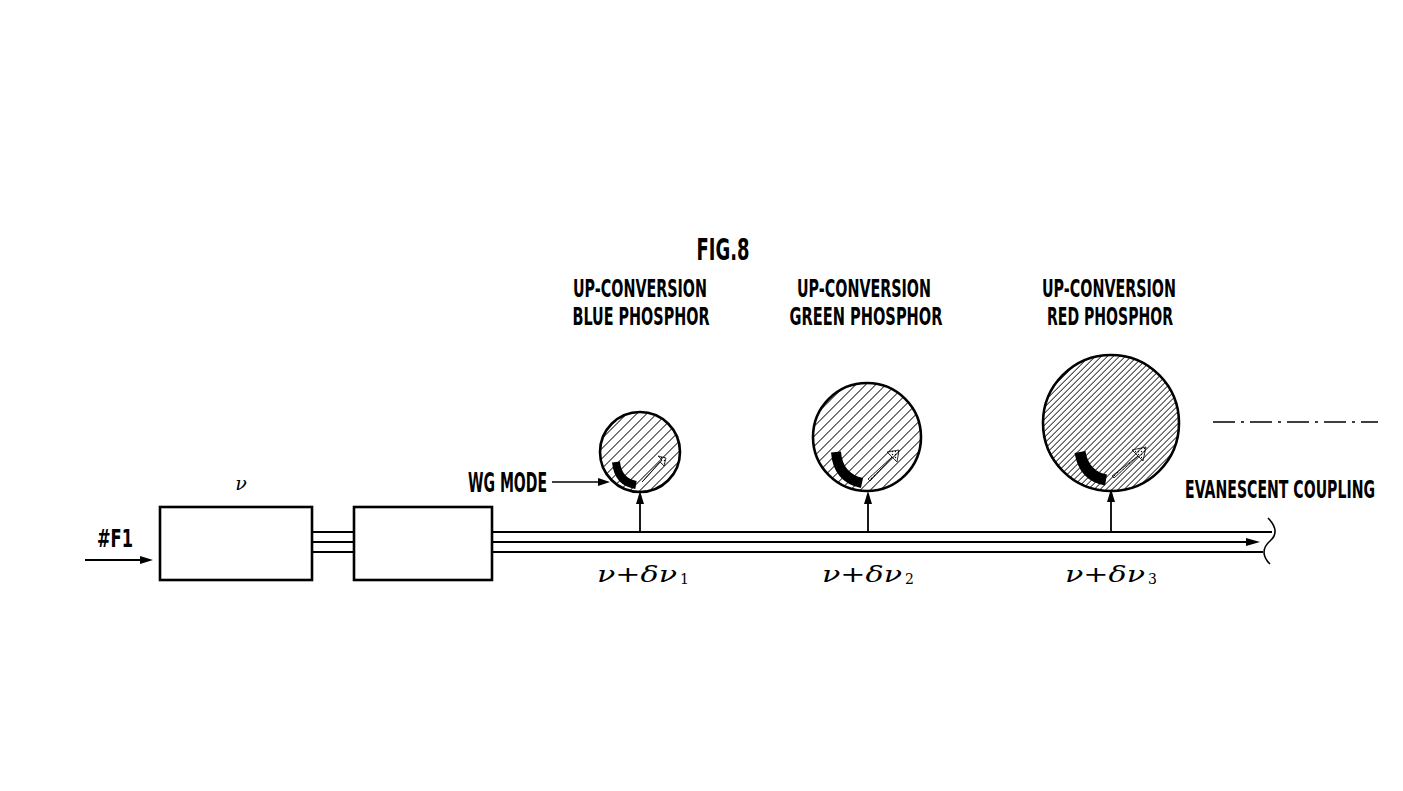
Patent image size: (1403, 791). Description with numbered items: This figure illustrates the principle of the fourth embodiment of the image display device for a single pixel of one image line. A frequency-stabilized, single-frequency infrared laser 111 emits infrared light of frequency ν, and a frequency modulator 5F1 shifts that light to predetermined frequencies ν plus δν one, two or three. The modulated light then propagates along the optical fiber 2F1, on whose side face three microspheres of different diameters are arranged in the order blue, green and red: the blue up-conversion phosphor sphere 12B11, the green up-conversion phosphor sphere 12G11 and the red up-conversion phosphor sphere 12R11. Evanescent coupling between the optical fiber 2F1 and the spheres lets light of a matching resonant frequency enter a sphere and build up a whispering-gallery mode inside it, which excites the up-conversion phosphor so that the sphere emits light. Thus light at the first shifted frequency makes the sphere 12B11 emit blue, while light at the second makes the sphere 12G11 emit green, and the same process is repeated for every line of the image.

The frequency-stabilized infrared laser 111 is at (245, 582).
The frequency modulator 5F1 is at (430, 582).
The optical fiber 2F1 is at (1242, 553).
The blue up-conversion phosphor sphere 12B11 is at (611, 428).
The green up-conversion phosphor sphere 12G11 is at (829, 396).
The red up-conversion phosphor sphere 12R11 is at (1068, 373).